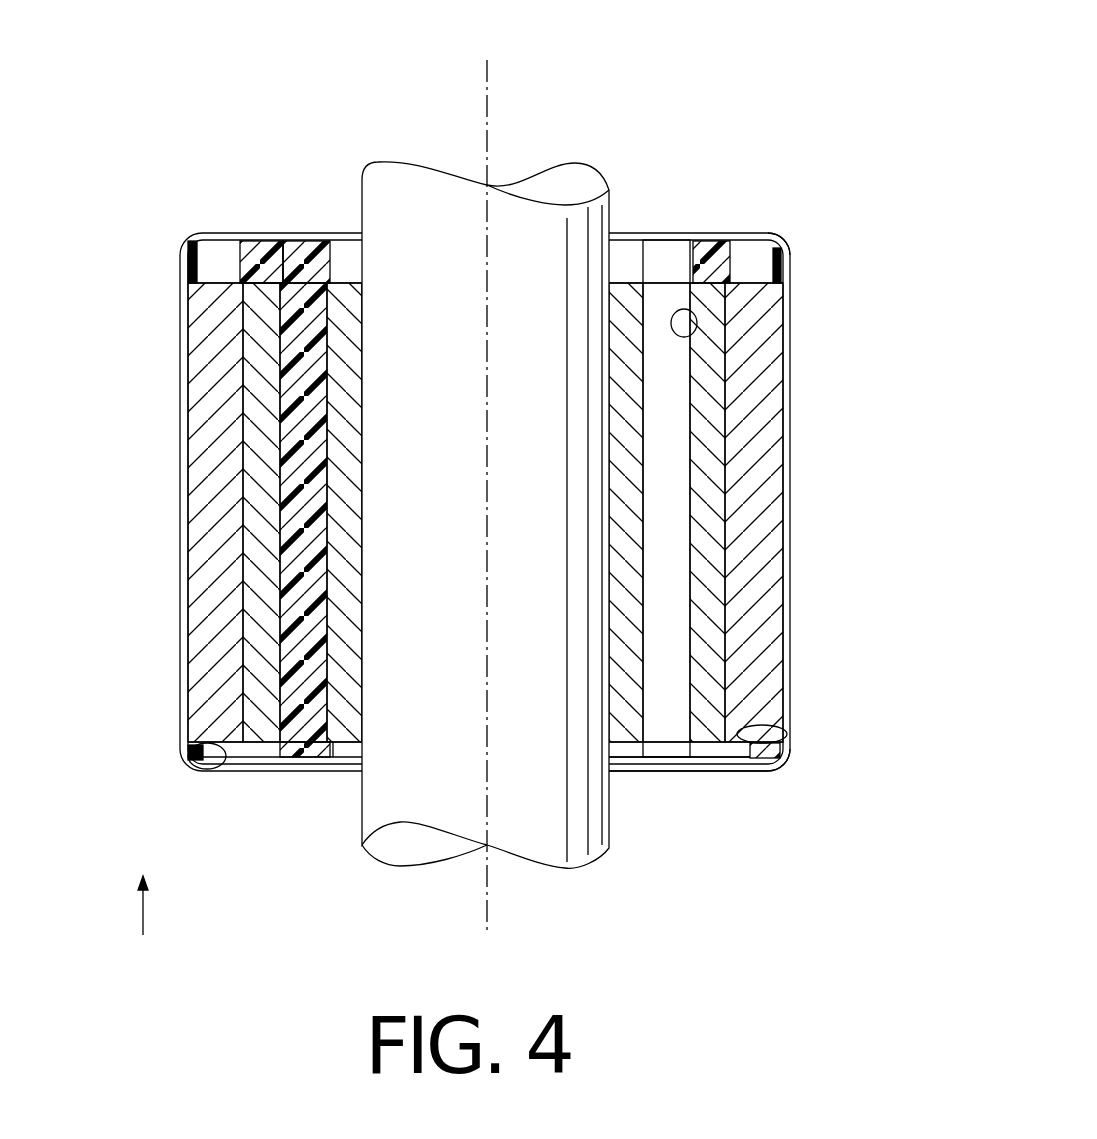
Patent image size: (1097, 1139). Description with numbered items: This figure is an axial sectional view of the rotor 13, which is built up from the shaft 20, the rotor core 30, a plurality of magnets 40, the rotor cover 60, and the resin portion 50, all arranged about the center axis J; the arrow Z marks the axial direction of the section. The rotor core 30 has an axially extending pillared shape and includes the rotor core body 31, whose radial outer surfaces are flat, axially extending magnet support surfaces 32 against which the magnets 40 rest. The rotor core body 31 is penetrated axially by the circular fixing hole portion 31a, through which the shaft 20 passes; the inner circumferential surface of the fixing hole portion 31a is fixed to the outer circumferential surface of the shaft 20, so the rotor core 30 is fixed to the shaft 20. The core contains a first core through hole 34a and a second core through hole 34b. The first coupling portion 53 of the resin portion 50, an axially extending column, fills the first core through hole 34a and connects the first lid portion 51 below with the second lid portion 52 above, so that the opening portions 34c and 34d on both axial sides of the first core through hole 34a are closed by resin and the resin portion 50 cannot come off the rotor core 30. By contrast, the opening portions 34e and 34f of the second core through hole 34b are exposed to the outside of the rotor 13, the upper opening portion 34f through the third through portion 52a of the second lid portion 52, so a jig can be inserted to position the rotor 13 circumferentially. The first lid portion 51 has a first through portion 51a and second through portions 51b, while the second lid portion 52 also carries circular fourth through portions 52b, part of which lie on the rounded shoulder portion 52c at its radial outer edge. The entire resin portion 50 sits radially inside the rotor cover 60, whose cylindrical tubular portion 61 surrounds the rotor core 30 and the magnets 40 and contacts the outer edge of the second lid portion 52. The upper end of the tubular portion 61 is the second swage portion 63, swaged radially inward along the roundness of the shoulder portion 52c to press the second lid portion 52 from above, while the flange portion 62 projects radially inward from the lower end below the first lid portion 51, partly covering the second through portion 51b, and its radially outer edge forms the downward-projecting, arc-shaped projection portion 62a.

The rotor 13 is at (498, 459).
The shaft 20 is at (569, 216).
The center axis J is at (492, 82).
The Z direction Z is at (142, 894).
The rotor core 30 is at (498, 476).
The rotor core body 31 is at (708, 693).
The fixing hole portion 31a is at (364, 655).
The magnet support surface 32 is at (245, 612).
The first core through hole 34a is at (288, 282).
The second core through hole 34b is at (698, 335).
The opening portion 34c is at (285, 764).
The opening portion 34d is at (308, 270).
The opening portion 34e is at (667, 763).
The opening portion 34f is at (672, 240).
The magnet 40 is at (207, 425).
The resin portion 50 is at (498, 494).
The first lid portion 51 is at (498, 804).
The first through portion 51a is at (650, 758).
The second through portion 51b is at (213, 762).
The second lid portion 52 is at (252, 245).
The third through portion 52a is at (661, 266).
The fourth through portion 52b is at (205, 258).
The shoulder portion 52c is at (784, 252).
The first coupling portion 53 is at (300, 510).
The rotor cover 60 is at (526, 521).
The tubular portion 61 is at (786, 400).
The flange portion 62 is at (735, 775).
The projection portion 62a is at (772, 772).
The second swage portion 63 is at (777, 237).